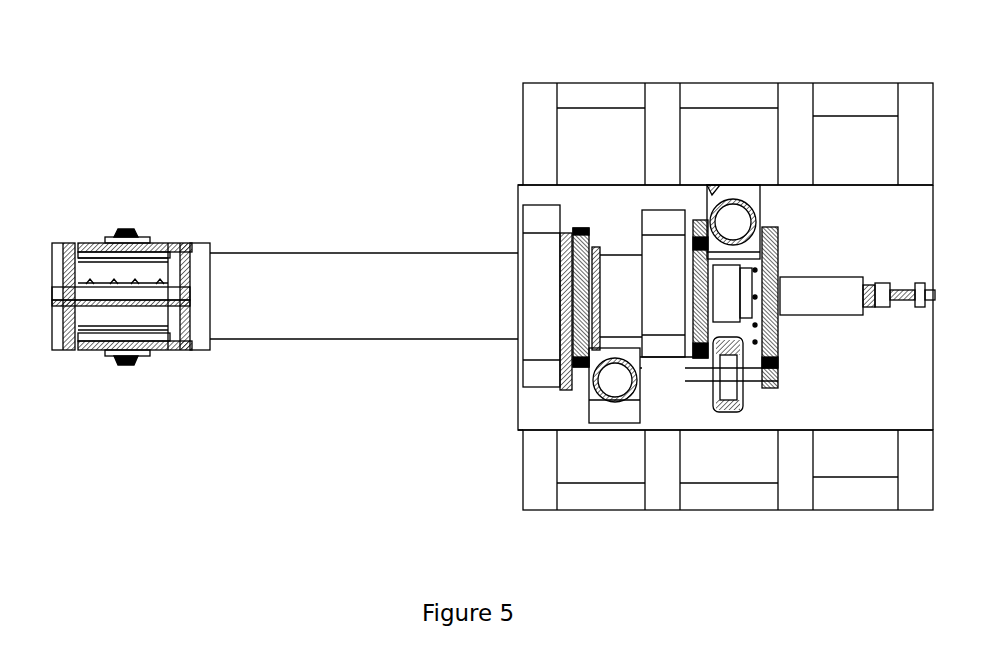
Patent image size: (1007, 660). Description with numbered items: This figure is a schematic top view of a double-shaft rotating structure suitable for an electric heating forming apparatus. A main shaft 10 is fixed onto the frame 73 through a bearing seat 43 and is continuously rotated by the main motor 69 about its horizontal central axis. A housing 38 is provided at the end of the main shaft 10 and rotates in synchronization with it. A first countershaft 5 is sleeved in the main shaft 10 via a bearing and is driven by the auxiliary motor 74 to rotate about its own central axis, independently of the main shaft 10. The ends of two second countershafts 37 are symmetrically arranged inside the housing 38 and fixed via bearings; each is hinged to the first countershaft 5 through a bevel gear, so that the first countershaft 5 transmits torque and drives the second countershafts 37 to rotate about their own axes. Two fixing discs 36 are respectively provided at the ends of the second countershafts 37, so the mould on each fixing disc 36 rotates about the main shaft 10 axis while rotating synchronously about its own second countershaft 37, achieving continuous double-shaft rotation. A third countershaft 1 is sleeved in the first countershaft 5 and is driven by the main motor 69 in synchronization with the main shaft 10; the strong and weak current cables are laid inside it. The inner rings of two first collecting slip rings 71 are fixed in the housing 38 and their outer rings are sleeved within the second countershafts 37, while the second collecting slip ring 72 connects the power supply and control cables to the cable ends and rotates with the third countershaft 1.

The third countershaft 1 is at (778, 253).
The first countershaft 5 is at (724, 285).
The main shaft 10 is at (272, 280).
The fixing disc 36 is at (165, 246).
The second countershaft 37 is at (133, 228).
The housing 38 is at (98, 265).
The bearing seat 43 is at (536, 282).
The main motor 69 is at (606, 388).
The first collecting slip ring 71 is at (120, 236).
The second collecting slip ring 72 is at (835, 298).
The frame 73 is at (532, 186).
The auxiliary motor 74 is at (708, 190).